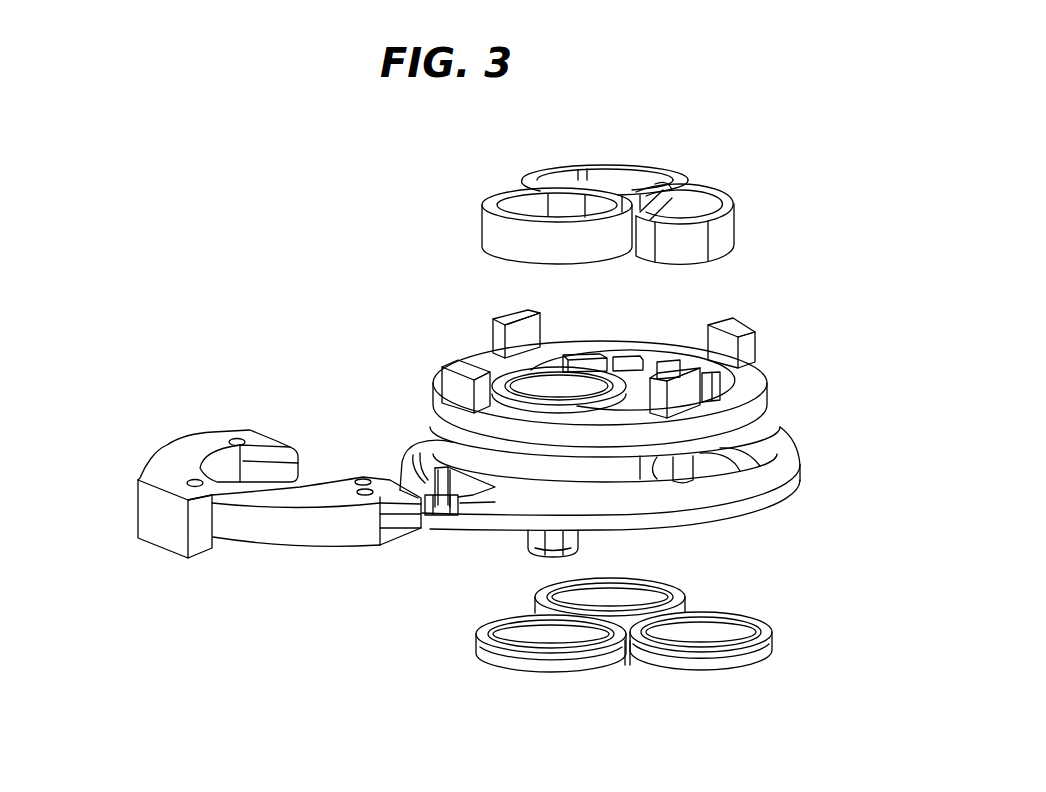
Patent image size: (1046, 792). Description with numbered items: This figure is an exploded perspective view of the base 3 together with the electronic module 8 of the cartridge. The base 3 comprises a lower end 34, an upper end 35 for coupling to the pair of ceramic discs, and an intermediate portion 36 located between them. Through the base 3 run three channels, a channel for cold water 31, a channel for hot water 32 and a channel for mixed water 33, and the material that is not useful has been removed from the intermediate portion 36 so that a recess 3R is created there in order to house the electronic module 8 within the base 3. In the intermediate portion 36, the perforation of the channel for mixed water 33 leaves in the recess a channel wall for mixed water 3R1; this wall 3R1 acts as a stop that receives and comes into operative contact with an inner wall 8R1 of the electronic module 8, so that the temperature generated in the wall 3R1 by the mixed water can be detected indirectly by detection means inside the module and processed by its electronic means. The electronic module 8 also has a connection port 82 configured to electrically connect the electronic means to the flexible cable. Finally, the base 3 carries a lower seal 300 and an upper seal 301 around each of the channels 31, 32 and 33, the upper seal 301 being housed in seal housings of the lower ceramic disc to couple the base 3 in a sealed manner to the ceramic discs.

The base 3 is at (401, 350).
The recess 3R is at (611, 484).
The channel wall for mixed water 3R1 is at (523, 459).
The electronic module 8 is at (178, 405).
The inner wall of the electronic module 8R1 is at (229, 471).
The connection port 82 is at (163, 523).
The channel for cold water 31 is at (608, 352).
The channel for hot water 32 is at (703, 370).
The channel for mixed water 33 is at (558, 389).
The lower end 34 is at (721, 524).
The upper end 35 is at (756, 375).
The intermediate portion 36 is at (782, 423).
The lower seal 300 is at (466, 638).
The upper seal 301 is at (491, 182).